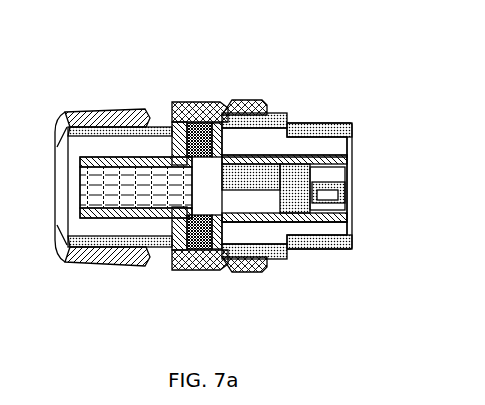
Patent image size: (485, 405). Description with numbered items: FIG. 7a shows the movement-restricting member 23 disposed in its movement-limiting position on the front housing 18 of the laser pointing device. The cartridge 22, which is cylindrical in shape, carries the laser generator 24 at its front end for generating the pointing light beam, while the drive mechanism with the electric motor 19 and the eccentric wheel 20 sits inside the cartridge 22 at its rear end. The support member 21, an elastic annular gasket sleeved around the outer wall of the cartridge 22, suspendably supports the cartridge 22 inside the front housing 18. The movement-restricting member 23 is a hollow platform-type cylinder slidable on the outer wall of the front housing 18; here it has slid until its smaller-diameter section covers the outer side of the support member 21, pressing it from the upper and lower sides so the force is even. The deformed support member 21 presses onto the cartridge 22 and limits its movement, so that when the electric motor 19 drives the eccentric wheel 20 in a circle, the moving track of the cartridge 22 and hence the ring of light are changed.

The front housing 18 is at (263, 103).
The electric motor 19 is at (267, 183).
The eccentric wheel 20 is at (333, 197).
The support member 21 is at (232, 122).
The cartridge 22 is at (171, 162).
The movement-restricting member 23 is at (207, 108).
The laser generator 24 is at (102, 185).